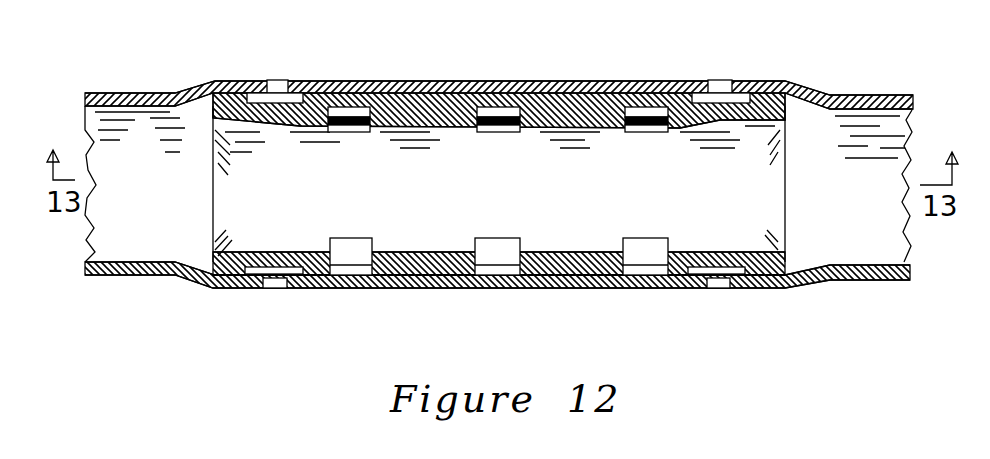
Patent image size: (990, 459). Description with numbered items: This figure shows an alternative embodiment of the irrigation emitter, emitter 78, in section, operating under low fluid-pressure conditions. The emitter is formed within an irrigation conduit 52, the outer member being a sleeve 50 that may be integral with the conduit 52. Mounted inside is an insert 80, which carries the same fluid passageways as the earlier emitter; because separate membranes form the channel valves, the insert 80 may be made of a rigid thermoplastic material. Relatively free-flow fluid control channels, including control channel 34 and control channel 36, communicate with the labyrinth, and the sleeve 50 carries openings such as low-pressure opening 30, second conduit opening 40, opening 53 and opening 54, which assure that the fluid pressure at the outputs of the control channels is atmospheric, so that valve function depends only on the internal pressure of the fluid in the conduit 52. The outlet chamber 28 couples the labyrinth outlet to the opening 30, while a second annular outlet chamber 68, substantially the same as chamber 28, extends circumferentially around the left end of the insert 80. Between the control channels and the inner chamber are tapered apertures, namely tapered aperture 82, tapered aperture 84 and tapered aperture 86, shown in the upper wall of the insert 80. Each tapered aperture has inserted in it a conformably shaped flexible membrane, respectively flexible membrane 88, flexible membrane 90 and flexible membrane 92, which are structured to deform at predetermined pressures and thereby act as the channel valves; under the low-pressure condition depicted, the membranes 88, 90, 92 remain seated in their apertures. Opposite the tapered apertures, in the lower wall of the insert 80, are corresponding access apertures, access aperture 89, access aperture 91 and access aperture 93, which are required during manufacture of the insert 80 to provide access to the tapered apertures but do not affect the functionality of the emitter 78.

The irrigation conduit 52 is at (120, 92).
The sleeve 50 is at (448, 80).
The second conduit opening 40 is at (270, 82).
The low-pressure opening 30 is at (718, 90).
The fluid control channel 36 is at (343, 106).
The fluid control channel 34 is at (489, 106).
The flexible membrane 92 is at (348, 128).
The tapered aperture 86 is at (352, 134).
The flexible membrane 90 is at (490, 132).
The tapered aperture 84 is at (500, 134).
The flexible membrane 88 is at (632, 134).
The tapered aperture 82 is at (632, 145).
The insert 80 is at (592, 252).
The access aperture 93 is at (360, 244).
The access aperture 91 is at (508, 244).
The access aperture 89 is at (656, 244).
The second annular outlet chamber 68 is at (258, 268).
The opening 53 is at (275, 290).
The outlet chamber 28 is at (706, 268).
The opening 54 is at (718, 290).
The emitter 78 is at (168, 299).